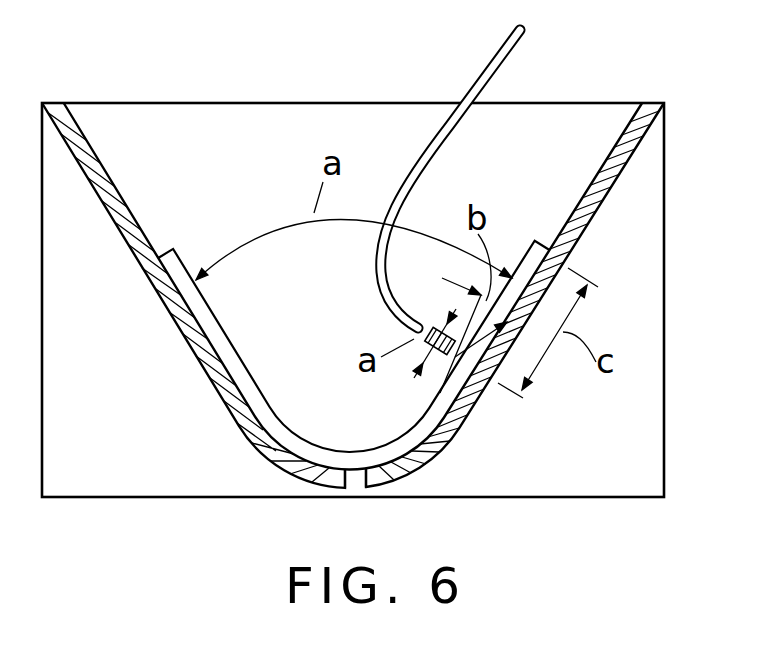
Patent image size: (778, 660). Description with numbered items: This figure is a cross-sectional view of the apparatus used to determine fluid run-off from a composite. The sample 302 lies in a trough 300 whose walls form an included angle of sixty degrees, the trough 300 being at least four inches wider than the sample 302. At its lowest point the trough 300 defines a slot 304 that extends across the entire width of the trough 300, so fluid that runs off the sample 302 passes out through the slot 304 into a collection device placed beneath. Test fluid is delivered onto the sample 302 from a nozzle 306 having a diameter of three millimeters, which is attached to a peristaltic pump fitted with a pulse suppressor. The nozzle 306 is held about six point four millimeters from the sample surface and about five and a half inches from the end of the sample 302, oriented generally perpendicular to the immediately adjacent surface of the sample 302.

The trough 300 is at (98, 153).
The sample 302 is at (518, 250).
The slot 304 is at (356, 480).
The nozzle 306 is at (431, 316).